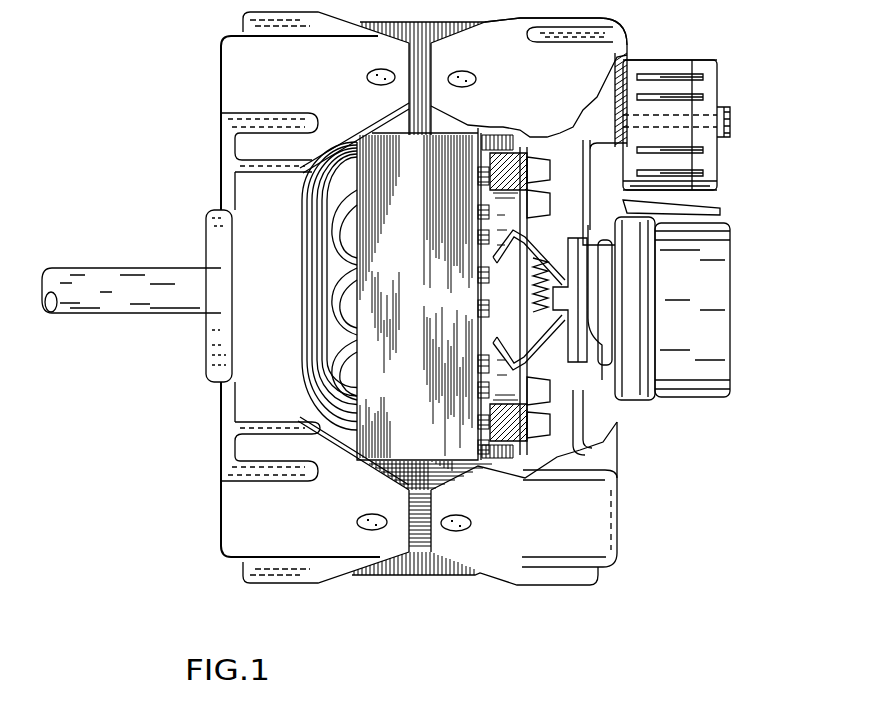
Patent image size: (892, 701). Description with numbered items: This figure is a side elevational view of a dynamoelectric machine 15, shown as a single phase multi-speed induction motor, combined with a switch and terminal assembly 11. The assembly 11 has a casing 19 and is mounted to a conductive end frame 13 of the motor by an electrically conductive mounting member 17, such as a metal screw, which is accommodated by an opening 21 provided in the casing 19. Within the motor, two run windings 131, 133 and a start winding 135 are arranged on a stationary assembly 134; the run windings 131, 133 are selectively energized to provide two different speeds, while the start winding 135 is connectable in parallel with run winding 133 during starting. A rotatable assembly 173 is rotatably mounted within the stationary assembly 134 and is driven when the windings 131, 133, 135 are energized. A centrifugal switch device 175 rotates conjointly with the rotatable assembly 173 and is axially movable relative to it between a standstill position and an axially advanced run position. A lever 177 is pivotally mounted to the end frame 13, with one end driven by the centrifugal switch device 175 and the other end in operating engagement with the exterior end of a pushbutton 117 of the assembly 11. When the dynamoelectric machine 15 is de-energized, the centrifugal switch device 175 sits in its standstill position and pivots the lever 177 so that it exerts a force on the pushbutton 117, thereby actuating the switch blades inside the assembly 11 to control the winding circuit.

The switch and terminal assembly 11 is at (727, 67).
The conductive end frame 13 is at (623, 32).
The dynamoelectric machine 15 is at (200, 89).
The mounting member 17 is at (728, 134).
The casing 19 is at (663, 58).
The opening 21 is at (700, 113).
The pushbutton 117 is at (712, 183).
The run winding 131 is at (315, 298).
The run winding 133 is at (297, 280).
The start winding 135 is at (278, 298).
The stationary assembly 134 is at (430, 444).
The rotatable assembly 173 is at (500, 152).
The centrifugal switch device 175 is at (550, 233).
The lever 177 is at (597, 260).